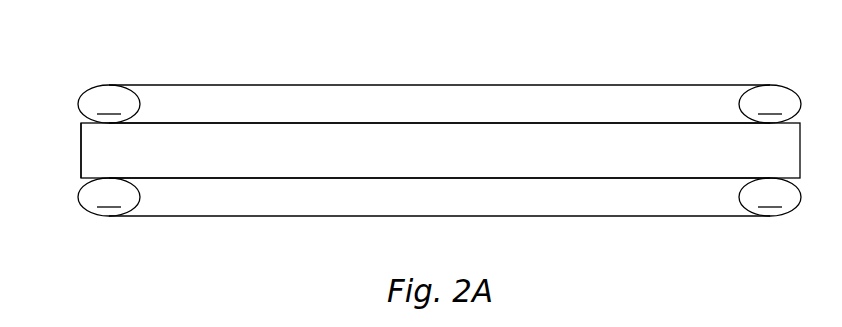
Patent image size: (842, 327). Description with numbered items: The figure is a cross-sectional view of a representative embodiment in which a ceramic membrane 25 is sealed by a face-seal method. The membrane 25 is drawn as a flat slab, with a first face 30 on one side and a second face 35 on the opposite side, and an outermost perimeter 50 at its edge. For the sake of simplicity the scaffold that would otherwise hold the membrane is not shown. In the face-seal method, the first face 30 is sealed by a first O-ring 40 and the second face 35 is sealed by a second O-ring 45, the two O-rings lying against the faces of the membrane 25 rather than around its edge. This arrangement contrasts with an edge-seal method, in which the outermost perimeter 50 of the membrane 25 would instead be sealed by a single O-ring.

The ceramic membrane 25 is at (433, 165).
The first face 30 is at (276, 123).
The second face 35 is at (276, 178).
The first O-ring 40 is at (155, 85).
The second O-ring 45 is at (155, 216).
The outermost perimeter 50 is at (81, 151).